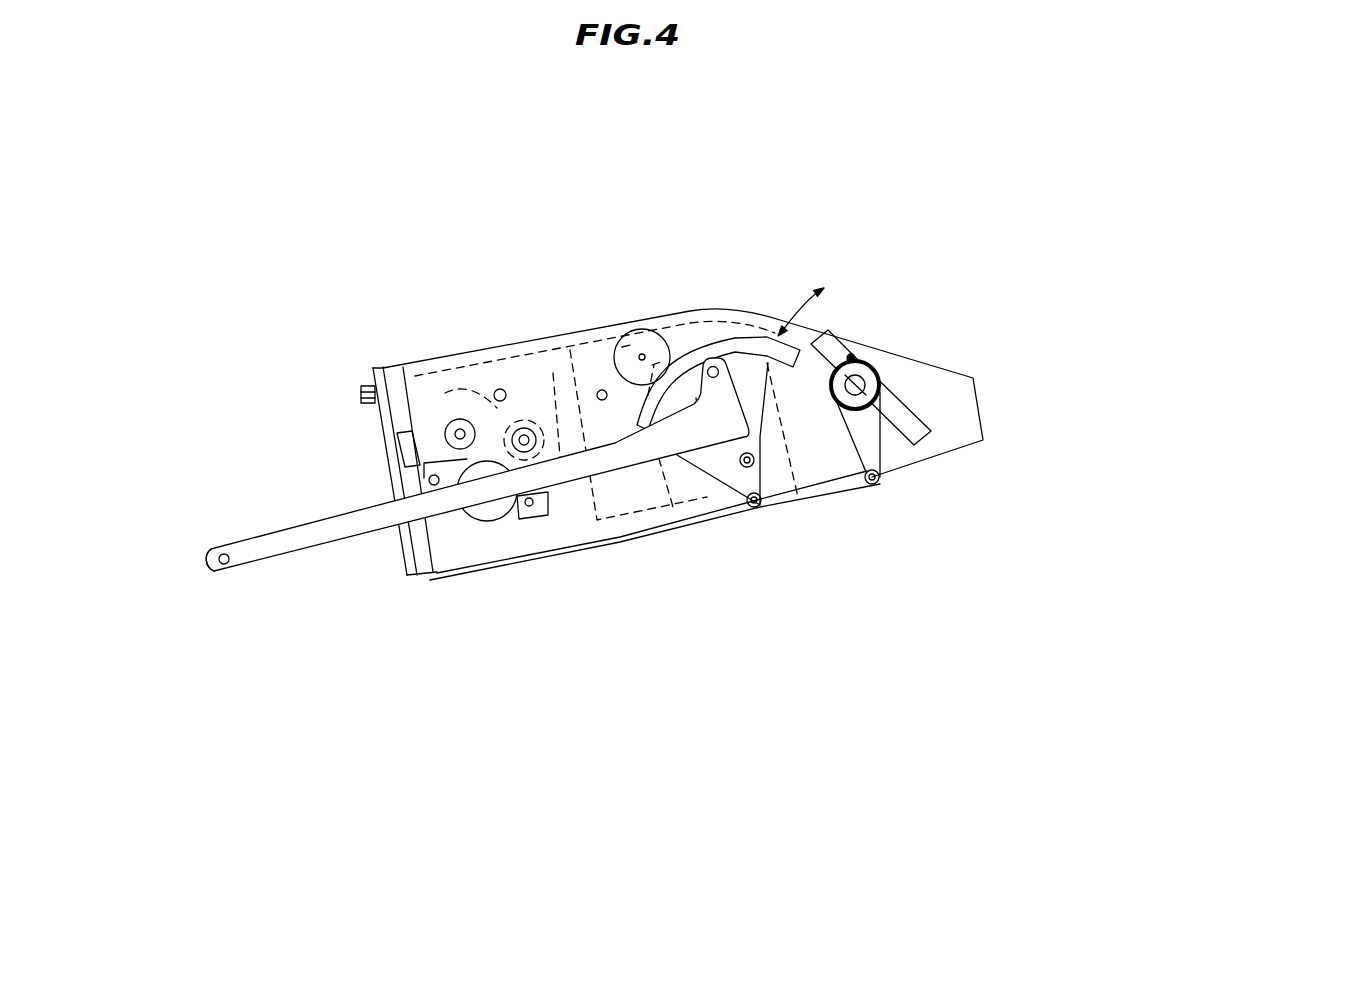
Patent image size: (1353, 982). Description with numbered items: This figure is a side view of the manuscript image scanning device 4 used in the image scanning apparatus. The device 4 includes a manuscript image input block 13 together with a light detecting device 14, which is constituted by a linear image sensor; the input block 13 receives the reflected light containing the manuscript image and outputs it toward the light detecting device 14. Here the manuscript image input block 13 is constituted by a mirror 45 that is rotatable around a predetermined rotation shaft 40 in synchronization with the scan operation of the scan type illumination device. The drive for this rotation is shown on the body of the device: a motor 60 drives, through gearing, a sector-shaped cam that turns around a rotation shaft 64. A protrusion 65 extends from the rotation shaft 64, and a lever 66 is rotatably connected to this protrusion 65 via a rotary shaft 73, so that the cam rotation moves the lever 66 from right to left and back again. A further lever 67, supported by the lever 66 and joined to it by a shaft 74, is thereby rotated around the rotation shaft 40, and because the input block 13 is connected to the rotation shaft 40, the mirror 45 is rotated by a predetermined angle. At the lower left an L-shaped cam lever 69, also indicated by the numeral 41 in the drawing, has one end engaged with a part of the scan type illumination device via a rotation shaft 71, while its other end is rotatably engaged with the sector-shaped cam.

The manuscript image scanning device 4 is at (200, 252).
The light detecting device 14 is at (420, 447).
The manuscript image input block 13 is at (830, 347).
The rotation shaft 40 is at (867, 368).
The mirror 45 is at (930, 441).
The lever 67 is at (872, 447).
The shaft 74 is at (885, 492).
The rotary shaft 73 is at (760, 504).
The lever 66 is at (850, 492).
The rotation shaft 64 is at (740, 463).
The protrusion 65 is at (737, 483).
The motor 60 is at (487, 518).
The L-shaped cam lever 69 is at (360, 528).
The lever 41 is at (281, 533).
The rotation shaft 71 is at (225, 565).